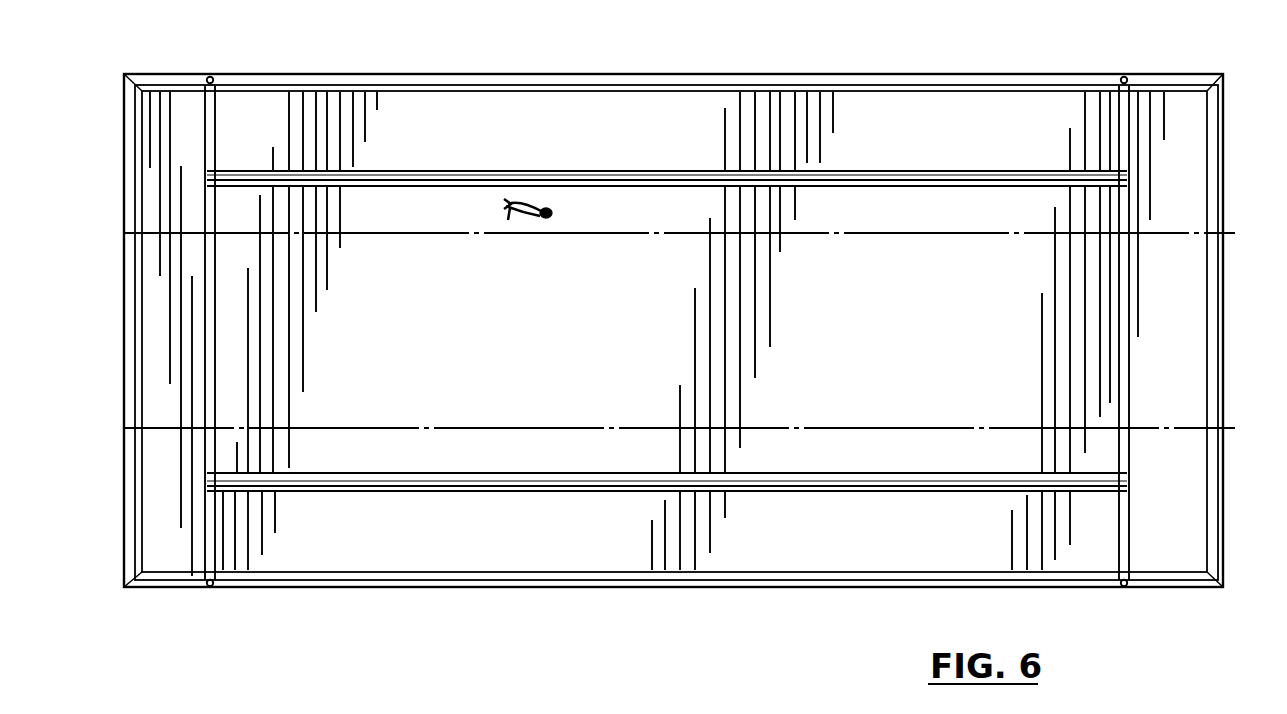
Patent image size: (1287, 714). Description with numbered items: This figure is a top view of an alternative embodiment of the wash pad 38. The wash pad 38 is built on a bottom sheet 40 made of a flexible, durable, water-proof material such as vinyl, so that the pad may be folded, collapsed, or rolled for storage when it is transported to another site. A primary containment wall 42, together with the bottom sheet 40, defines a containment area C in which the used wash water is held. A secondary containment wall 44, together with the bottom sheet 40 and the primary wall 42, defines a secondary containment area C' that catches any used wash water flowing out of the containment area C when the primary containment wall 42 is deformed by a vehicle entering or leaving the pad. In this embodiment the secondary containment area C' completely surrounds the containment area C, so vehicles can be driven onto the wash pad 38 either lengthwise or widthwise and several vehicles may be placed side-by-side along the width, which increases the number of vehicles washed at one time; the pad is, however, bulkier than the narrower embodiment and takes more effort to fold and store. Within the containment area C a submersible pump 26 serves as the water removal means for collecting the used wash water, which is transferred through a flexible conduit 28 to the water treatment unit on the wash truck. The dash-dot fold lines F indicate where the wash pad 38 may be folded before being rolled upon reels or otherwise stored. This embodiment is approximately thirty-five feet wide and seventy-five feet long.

The submersible pump 26 is at (548, 210).
The flexible conduit 28 is at (522, 204).
The wash pad 38 is at (641, 592).
The bottom sheet 40 is at (147, 283).
The primary containment wall 42 is at (257, 170).
The secondary containment wall 44 is at (908, 74).
The fold lines F is at (1235, 233).
The containment area C is at (876, 354).
The secondary containment area C' is at (664, 244).